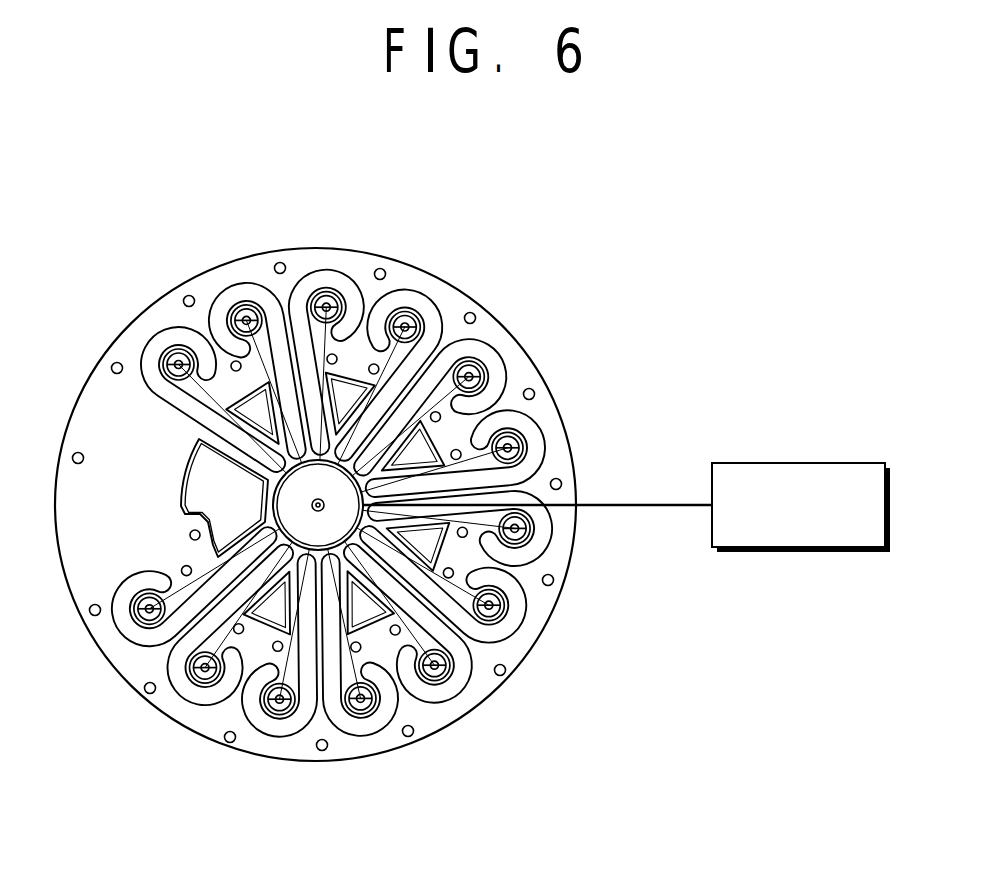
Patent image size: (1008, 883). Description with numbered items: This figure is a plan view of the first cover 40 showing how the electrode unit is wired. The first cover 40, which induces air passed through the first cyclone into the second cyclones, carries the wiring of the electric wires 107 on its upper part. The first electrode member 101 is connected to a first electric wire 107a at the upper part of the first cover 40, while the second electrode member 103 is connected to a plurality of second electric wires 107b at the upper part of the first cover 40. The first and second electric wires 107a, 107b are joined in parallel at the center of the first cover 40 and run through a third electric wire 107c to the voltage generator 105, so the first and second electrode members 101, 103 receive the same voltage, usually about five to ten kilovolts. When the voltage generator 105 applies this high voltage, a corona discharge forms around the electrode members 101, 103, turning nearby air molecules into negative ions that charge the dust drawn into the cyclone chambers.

The first cover 40 is at (490, 300).
The first electrode member 101 is at (405, 326).
The second electrode member 103 is at (318, 505).
The voltage generator 105 is at (797, 462).
The electric wires 107 is at (603, 318).
The first electric wire 107a is at (512, 443).
The second electric wires 107b is at (472, 370).
The third electric wire 107c is at (637, 503).